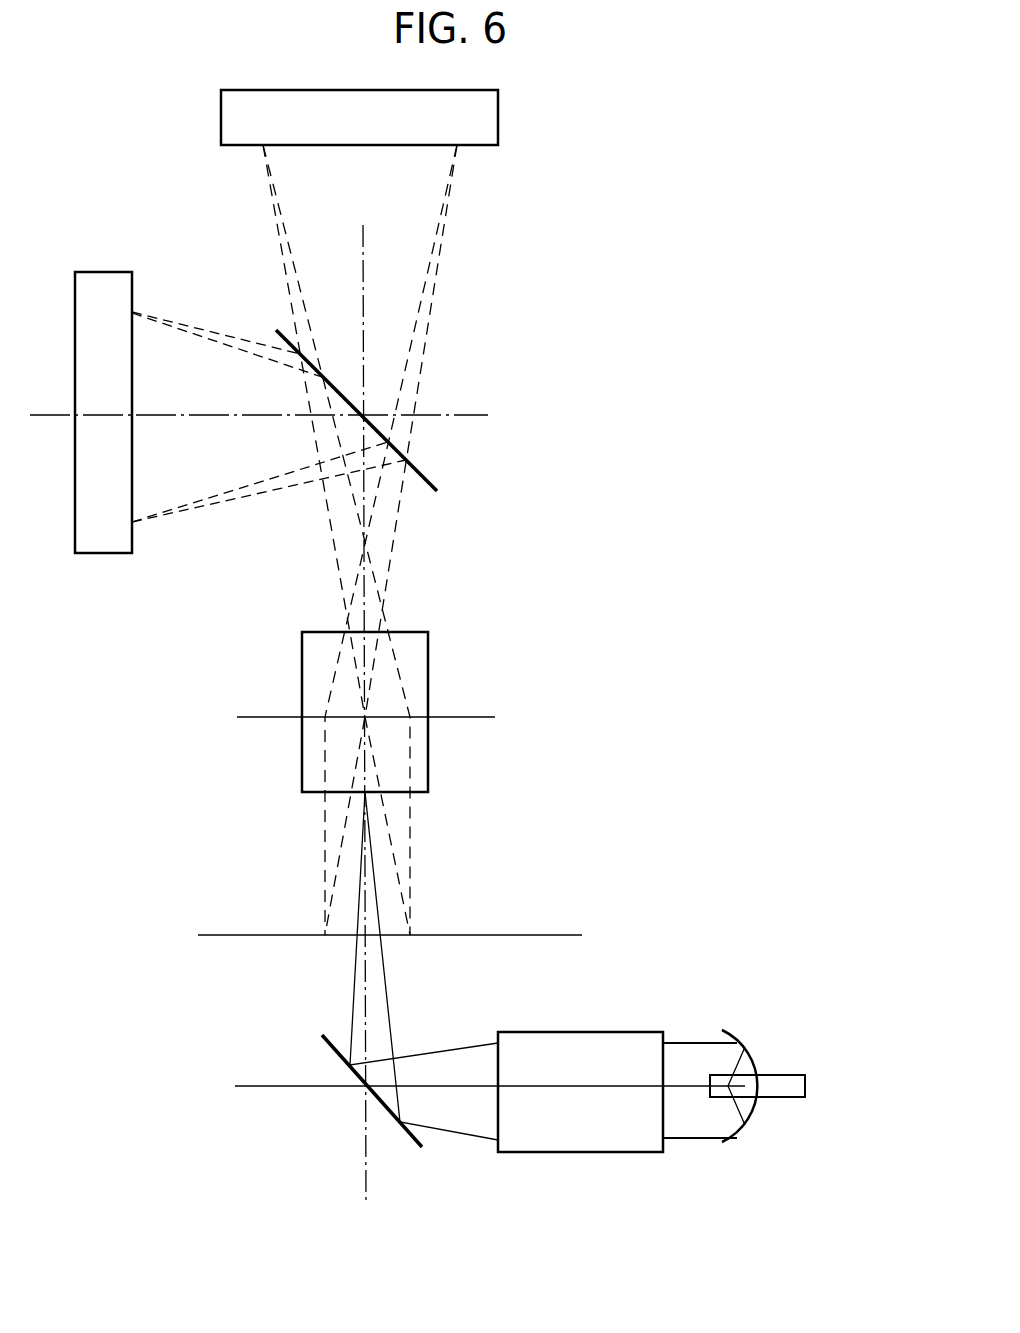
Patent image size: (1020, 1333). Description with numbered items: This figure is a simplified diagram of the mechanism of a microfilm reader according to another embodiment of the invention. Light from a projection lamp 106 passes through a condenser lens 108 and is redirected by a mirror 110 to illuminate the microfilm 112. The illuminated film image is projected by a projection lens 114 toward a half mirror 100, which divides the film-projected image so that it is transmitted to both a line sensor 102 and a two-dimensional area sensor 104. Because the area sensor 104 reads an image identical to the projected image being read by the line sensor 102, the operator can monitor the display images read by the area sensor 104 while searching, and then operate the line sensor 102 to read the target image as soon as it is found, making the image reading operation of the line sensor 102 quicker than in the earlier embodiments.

The half mirror 100 is at (437, 486).
The line sensor 102 is at (498, 118).
The two-dimensional area sensor 104 is at (108, 555).
The projection lamp 106 is at (757, 1125).
The condenser lens 108 is at (530, 1152).
The mirror 110 is at (325, 1035).
The microfilm 112 is at (500, 932).
The projection lens 114 is at (428, 660).